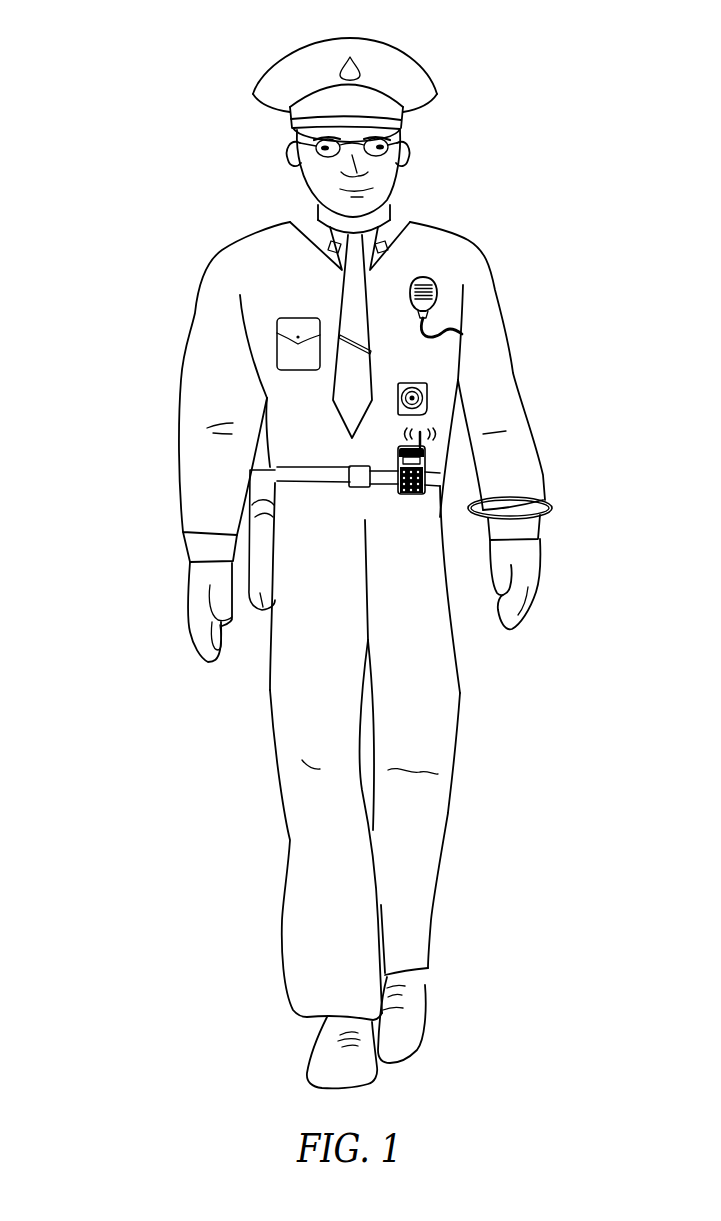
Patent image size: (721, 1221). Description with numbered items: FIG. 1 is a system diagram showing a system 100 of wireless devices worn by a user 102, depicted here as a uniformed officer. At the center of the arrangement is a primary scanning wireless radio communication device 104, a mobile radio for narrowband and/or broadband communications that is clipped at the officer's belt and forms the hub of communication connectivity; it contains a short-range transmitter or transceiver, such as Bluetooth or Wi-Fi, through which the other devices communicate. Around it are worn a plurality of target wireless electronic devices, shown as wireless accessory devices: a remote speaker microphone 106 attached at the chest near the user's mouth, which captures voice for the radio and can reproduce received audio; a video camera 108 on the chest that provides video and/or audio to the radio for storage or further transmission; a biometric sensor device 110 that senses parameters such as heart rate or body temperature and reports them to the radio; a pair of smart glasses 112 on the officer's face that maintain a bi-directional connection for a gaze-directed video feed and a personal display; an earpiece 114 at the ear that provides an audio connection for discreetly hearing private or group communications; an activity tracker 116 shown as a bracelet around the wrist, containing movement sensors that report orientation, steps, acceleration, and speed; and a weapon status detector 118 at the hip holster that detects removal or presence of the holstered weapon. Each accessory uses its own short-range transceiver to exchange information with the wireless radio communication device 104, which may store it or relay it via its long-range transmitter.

The system 100 is at (78, 115).
The user 102 is at (456, 230).
The wireless radio communication device 104 is at (427, 448).
The remote speaker microphone 106 is at (437, 290).
The video camera 108 is at (427, 388).
The biometric sensor device 110 is at (333, 478).
The smart glasses 112 is at (394, 140).
The earpiece 114 is at (400, 157).
The activity tracker 116 is at (550, 497).
The weapon status detector 118 is at (250, 612).